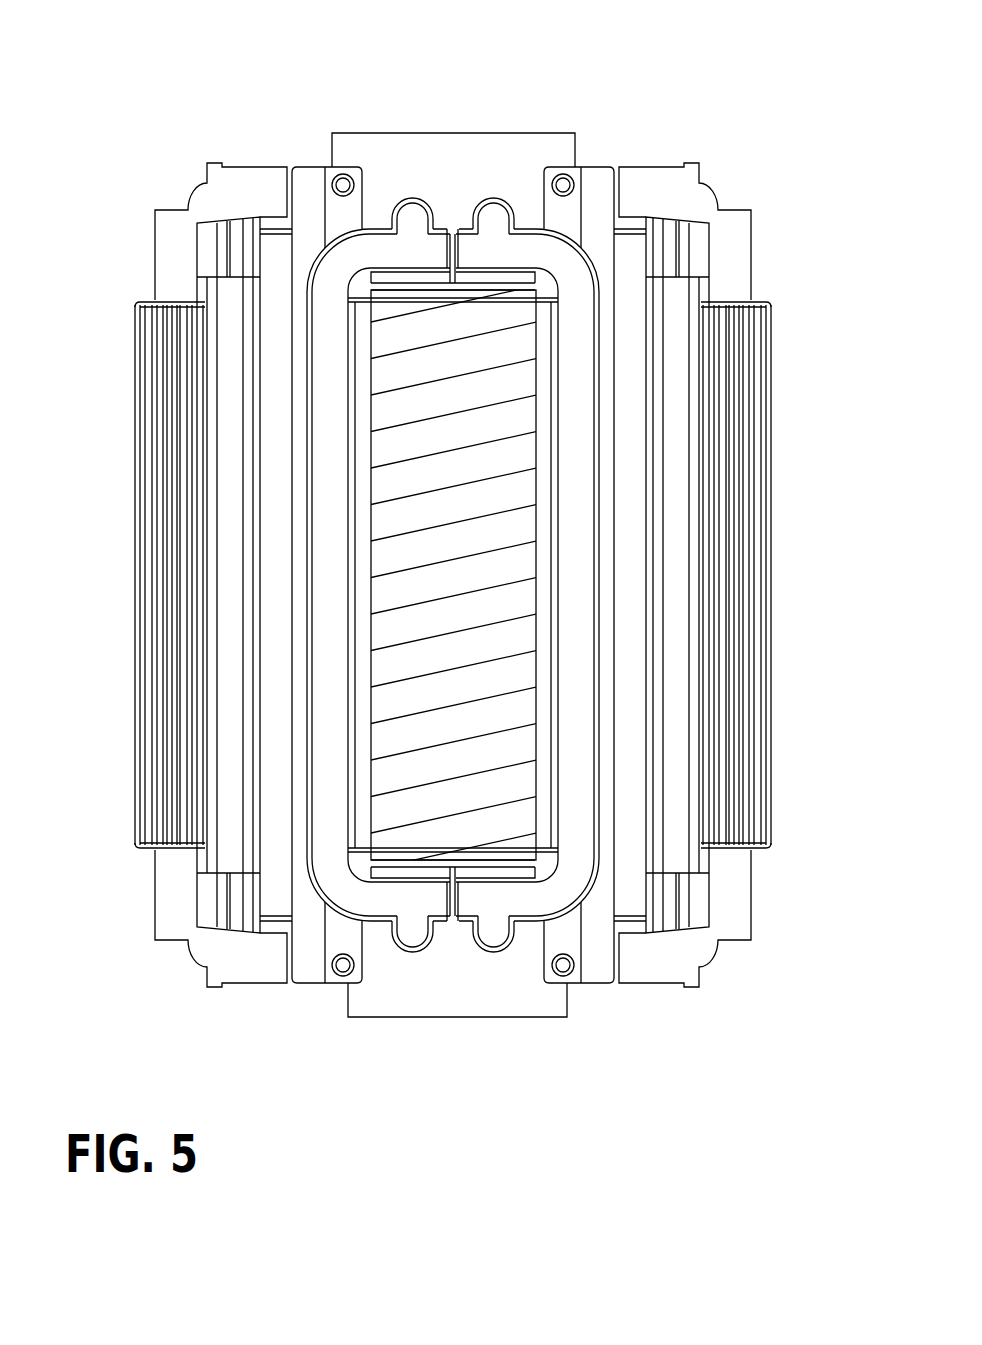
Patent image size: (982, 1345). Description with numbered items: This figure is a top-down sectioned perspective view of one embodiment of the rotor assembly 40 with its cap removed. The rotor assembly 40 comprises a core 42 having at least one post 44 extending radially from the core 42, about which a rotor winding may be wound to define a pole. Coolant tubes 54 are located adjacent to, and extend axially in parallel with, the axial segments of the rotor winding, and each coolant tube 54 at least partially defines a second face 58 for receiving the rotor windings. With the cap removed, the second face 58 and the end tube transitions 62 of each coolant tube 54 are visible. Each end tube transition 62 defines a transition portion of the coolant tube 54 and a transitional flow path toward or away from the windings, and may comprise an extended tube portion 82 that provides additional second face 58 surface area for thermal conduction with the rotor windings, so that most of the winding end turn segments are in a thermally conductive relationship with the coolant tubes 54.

The rotor assembly 40 is at (118, 73).
The core 42 is at (501, 122).
The post 44 is at (492, 782).
The coolant tube 54 is at (327, 703).
The second face 58 is at (333, 542).
The end tube transition 62 is at (399, 190).
The extended tube portion 82 is at (436, 250).